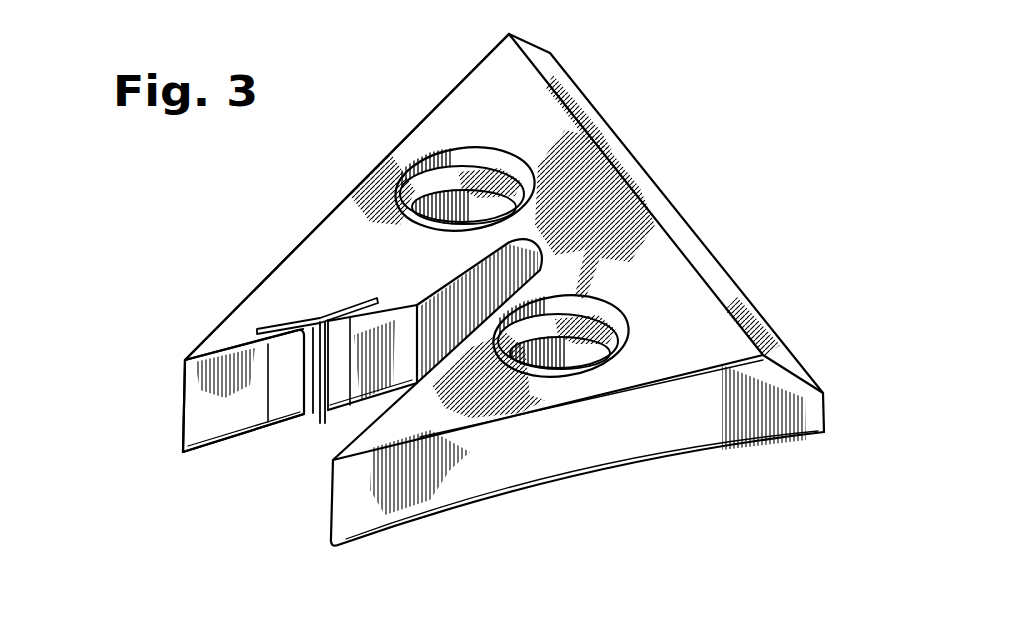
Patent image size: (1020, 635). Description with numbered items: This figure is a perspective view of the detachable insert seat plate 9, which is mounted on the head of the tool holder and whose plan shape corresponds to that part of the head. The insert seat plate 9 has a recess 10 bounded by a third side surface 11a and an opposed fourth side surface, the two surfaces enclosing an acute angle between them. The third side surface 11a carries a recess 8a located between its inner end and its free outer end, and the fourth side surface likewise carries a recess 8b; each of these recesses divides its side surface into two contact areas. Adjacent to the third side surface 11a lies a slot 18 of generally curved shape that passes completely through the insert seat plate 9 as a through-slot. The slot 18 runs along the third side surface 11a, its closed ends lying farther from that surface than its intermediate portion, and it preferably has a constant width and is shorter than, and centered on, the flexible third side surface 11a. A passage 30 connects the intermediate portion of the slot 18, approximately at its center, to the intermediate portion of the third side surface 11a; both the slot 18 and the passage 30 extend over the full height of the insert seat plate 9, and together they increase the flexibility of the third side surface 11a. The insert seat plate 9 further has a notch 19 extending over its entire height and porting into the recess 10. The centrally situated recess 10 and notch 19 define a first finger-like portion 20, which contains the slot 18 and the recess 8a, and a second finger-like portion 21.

The insert seat plate 9 is at (370, 122).
The recess 10 is at (228, 483).
The slot 18 is at (290, 322).
The notch 19 is at (530, 207).
The first finger-like portion 20 is at (229, 305).
The second finger-like portion 21 is at (496, 484).
The passage 30 is at (322, 423).
The recess 8a is at (304, 370).
The recess 8b is at (400, 398).
The third side surface 11a is at (195, 403).